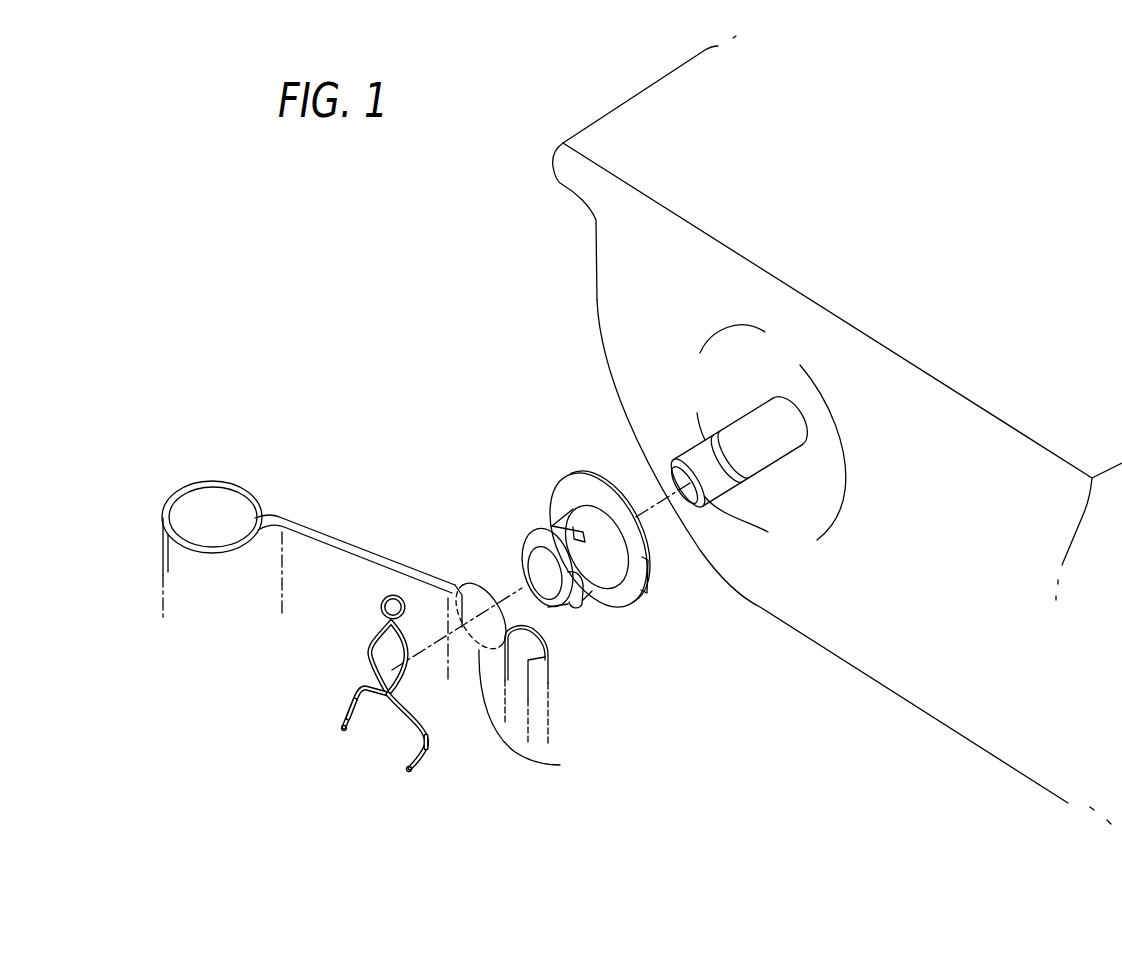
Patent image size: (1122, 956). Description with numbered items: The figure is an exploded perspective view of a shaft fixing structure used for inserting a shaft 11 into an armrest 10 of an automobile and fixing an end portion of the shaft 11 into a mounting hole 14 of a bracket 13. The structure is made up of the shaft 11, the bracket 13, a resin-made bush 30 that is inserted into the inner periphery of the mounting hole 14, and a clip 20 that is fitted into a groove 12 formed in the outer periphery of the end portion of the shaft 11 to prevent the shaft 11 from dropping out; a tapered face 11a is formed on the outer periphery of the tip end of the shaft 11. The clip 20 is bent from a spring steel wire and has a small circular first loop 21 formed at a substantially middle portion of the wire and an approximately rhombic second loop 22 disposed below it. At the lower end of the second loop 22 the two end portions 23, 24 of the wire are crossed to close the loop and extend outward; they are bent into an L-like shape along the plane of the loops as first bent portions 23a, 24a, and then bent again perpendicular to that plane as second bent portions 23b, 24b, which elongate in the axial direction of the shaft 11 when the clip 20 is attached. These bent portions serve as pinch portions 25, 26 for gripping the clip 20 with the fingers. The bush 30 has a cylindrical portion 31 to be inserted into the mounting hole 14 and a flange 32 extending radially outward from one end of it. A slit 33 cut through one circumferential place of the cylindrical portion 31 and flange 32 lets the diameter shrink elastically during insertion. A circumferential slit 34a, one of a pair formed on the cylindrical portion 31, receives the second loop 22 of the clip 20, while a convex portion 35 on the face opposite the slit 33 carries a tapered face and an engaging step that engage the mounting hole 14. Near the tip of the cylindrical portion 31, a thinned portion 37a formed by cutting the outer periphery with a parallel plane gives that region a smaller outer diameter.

The armrest 10 is at (862, 237).
The shaft 11 is at (790, 428).
The tapered face 11a is at (703, 500).
The groove 12 is at (729, 422).
The bracket 13 is at (547, 693).
The mounting hole 14 is at (545, 762).
The clip 20 is at (340, 641).
The first loop 21 is at (384, 587).
The second loop 22 is at (366, 660).
The end portion 23 is at (361, 682).
The first bent portion 23a is at (340, 705).
The second bent portion 23b is at (350, 731).
The end portion 24 is at (404, 727).
The first bent portion 24a is at (427, 745).
The second bent portion 24b is at (412, 772).
The pinch portion 25 is at (192, 742).
The pinch portion 26 is at (503, 765).
The bush 30 is at (560, 418).
The cylindrical portion 31 is at (595, 601).
The flange 32 is at (643, 543).
The slit 33 is at (543, 607).
The circumferential slit 34a is at (587, 603).
The convex portion 35 is at (562, 506).
The thinned portion 37a is at (582, 604).